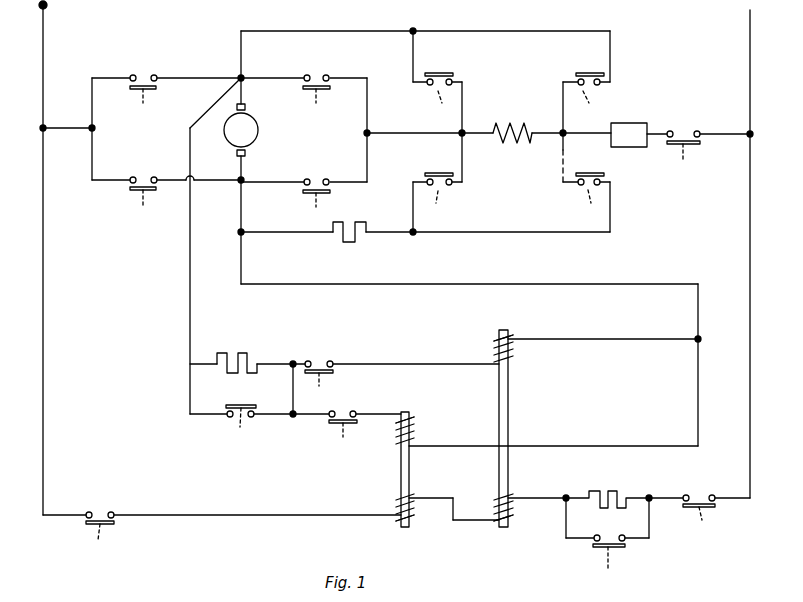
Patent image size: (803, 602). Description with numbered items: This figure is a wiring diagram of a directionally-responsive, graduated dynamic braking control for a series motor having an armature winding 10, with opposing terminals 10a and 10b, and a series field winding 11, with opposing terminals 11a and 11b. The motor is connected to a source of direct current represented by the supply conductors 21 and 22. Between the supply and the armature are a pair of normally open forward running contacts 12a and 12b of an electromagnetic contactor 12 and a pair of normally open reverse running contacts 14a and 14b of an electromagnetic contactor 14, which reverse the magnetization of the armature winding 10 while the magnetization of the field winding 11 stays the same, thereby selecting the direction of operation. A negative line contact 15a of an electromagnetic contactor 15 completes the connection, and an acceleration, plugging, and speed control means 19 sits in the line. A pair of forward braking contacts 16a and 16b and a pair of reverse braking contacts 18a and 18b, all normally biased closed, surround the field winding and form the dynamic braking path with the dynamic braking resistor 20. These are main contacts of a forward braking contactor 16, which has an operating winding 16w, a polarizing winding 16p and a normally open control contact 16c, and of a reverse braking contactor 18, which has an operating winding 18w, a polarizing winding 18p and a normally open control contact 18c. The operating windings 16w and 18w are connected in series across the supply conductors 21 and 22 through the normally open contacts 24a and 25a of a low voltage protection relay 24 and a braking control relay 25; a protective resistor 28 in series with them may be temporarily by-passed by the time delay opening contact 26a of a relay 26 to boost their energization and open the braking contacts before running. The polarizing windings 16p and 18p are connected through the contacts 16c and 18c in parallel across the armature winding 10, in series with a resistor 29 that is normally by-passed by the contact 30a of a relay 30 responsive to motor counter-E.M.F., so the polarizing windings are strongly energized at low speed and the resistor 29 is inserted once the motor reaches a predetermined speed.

The armature winding 10 is at (254, 129).
The armature terminal 10a is at (246, 107).
The armature terminal 10b is at (246, 154).
The series field winding 11 is at (489, 128).
The field winding terminal 11a is at (465, 139).
The field winding terminal 11b is at (556, 138).
The electromagnetic contactor 12 is at (144, 99).
The forward running contact 12a is at (143, 74).
The forward running contact 12b is at (316, 178).
The electromagnetic contactor 14 is at (144, 201).
The reverse running contact 14a is at (143, 176).
The reverse running contact 14b is at (315, 74).
The electromagnetic contactor 15 is at (685, 157).
The negative line contact 15a is at (684, 130).
The forward braking contactor 16 is at (409, 473).
The forward braking contact 16a is at (428, 85).
The forward braking contact 16b is at (583, 188).
The control circuit contact 16c is at (343, 410).
The polarizing winding 16p is at (413, 422).
The operating winding 16w is at (410, 519).
The reverse braking contactor 18 is at (508, 409).
The reverse braking contact 18a is at (598, 86).
The reverse braking contact 18b is at (443, 189).
The control circuit contact 18c is at (320, 360).
The polarizing winding 18p is at (512, 347).
The operating winding 18w is at (511, 518).
The acceleration, plugging, and speed control means 19 is at (638, 147).
The dynamic braking resistor 20 is at (352, 244).
The supply conductor 21 is at (45, 38).
The supply conductor 22 is at (748, 31).
The low voltage protection relay 24 is at (100, 536).
The normally open contact 24a is at (99, 511).
The braking control relay 25 is at (704, 520).
The normally open contact 25a is at (699, 494).
The relay 26 is at (609, 565).
The time delay opening contact 26a is at (610, 531).
The protective resistor 28 is at (612, 490).
The resistor 29 is at (231, 351).
The relay 30 is at (242, 424).
The contact 30a is at (236, 404).